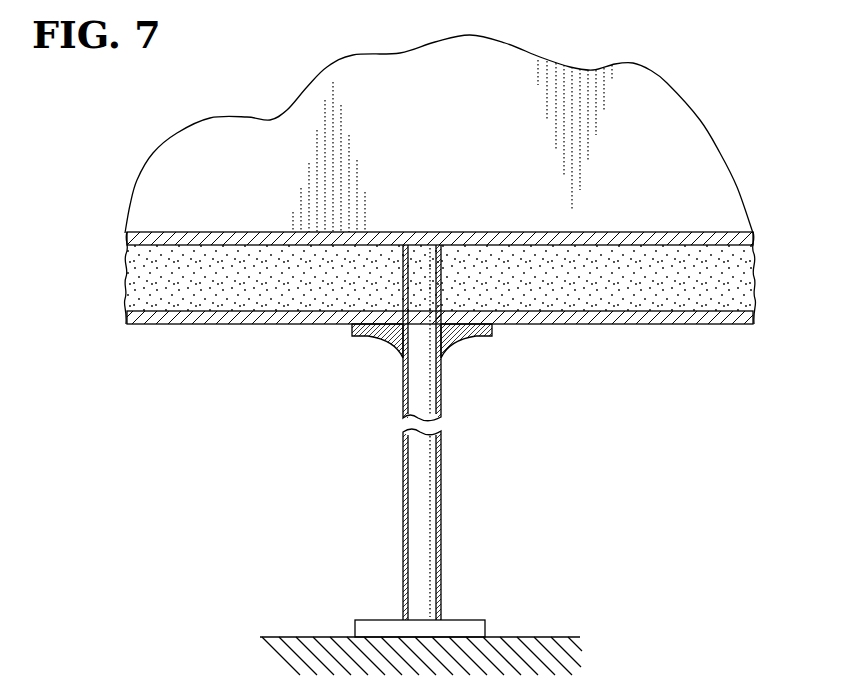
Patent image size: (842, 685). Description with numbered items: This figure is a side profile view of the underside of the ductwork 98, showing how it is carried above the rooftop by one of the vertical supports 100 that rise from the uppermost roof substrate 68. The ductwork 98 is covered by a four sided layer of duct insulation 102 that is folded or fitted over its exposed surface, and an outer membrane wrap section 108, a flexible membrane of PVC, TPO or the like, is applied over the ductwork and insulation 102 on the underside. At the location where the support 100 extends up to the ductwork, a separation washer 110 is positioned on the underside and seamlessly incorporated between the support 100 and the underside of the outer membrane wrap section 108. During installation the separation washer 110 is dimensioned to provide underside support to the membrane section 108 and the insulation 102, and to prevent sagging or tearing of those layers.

The ductwork 98 is at (193, 163).
The duct insulation 102 is at (152, 273).
The membrane section 108 is at (190, 324).
The separation washer 110 is at (362, 338).
The vertical support 100 is at (415, 488).
The roof substrate 68 is at (310, 637).